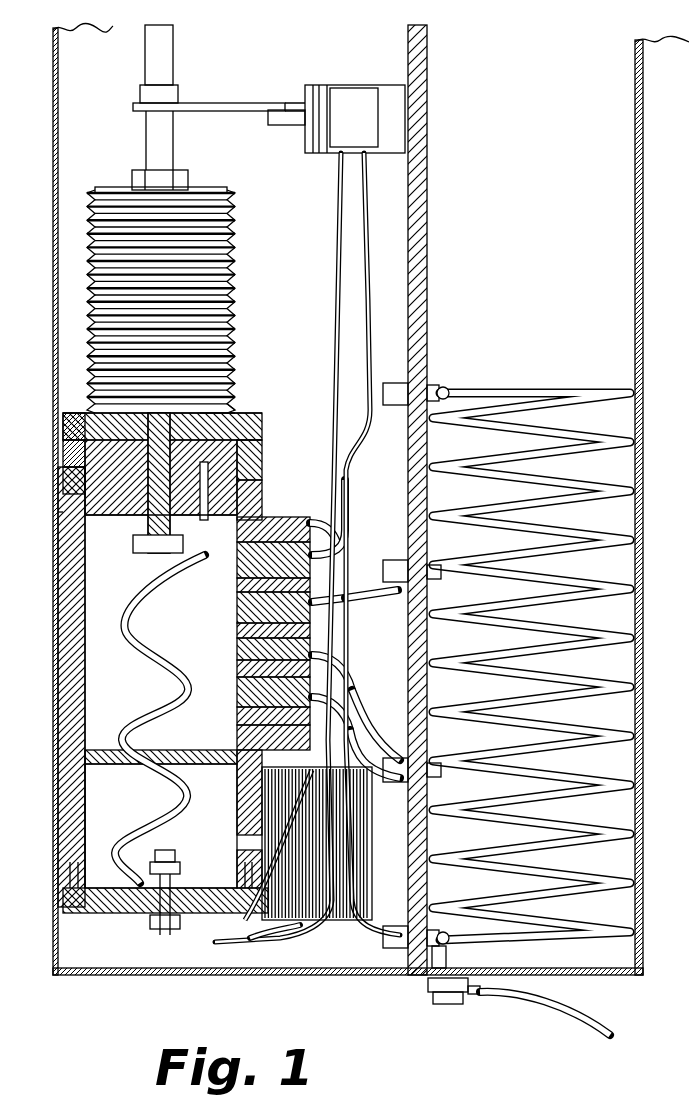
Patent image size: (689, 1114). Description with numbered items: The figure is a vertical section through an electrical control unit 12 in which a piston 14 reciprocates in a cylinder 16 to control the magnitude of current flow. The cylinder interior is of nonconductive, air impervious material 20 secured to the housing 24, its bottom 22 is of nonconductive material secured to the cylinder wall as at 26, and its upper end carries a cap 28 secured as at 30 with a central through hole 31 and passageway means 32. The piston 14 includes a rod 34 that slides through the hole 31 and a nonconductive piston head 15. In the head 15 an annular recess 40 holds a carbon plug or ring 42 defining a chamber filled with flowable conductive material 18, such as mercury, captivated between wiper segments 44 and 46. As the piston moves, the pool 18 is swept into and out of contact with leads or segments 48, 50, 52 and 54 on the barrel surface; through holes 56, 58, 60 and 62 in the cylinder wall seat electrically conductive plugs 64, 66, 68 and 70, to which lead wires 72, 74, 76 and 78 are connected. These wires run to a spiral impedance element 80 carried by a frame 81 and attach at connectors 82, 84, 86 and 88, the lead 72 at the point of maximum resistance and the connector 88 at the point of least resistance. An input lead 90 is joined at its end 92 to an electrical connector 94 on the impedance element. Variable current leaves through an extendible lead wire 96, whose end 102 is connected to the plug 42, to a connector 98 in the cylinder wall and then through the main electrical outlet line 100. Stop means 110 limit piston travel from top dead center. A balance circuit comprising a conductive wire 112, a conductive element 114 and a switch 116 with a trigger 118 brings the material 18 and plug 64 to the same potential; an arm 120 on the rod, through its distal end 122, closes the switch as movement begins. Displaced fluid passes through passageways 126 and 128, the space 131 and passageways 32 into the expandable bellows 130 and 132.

The electrical control unit 12 is at (20, 514).
The piston 14 is at (181, 149).
The piston head 15 is at (120, 535).
The cylinder 16 is at (58, 650).
The flowable conductive material 18 is at (85, 485).
The nonconductive air impervious material 20 is at (58, 606).
The cylinder bottom 22 is at (100, 913).
The housing 24 is at (53, 322).
The bottom securement 26 is at (53, 946).
The cap 28 is at (262, 432).
The cap securement 30 is at (255, 415).
The central through hole 31 is at (200, 413).
The passageway means 32 is at (230, 404).
The rod 34 is at (147, 150).
The annular recess 40 is at (262, 465).
The plug or ring 42 is at (262, 483).
The captivating wiper segment 44 is at (63, 465).
The captivating wiper segment 46 is at (63, 522).
The lead or segment 48 is at (245, 573).
The lead or segment 50 is at (245, 619).
The lead or segment 52 is at (245, 663).
The lead or segment 54 is at (245, 704).
The through hole 56 is at (313, 519).
The through hole 58 is at (333, 598).
The through hole 60 is at (322, 657).
The through hole 62 is at (345, 704).
The electrically conductive plug 64 is at (241, 557).
The electrically conductive plug 66 is at (241, 606).
The electrically conductive plug 68 is at (241, 650).
The electrically conductive plug 70 is at (241, 693).
The lead wire 72 is at (338, 558).
The lead wire 74 is at (356, 600).
The lead wire 76 is at (361, 716).
The lead wire 78 is at (363, 742).
The impedance element 80 is at (570, 392).
The frame 81 is at (430, 336).
The connector 82 is at (438, 384).
The connector 84 is at (442, 566).
The connector 86 is at (442, 766).
The connector 88 is at (440, 930).
The input lead 90 is at (590, 1011).
The input lead end 92 is at (488, 992).
The electrical connector 94 is at (428, 988).
The extendible lead wire 96 is at (166, 679).
The connector 98 is at (180, 874).
The main electrical outlet line 100 is at (290, 936).
The end of extendible conductor 102 is at (204, 522).
The stop means 110 is at (226, 753).
The conductive wire 112 is at (333, 300).
The conductive element 114 is at (371, 322).
The switch 116 is at (353, 100).
The trigger 118 is at (286, 125).
The arm 120 is at (252, 95).
The distal end of arm 122 is at (290, 105).
The passageway 126 is at (160, 553).
The passageway 128 is at (237, 840).
The upper expandable portion 130 is at (237, 331).
The space 131 is at (262, 446).
The lower expandable portion 132 is at (372, 844).